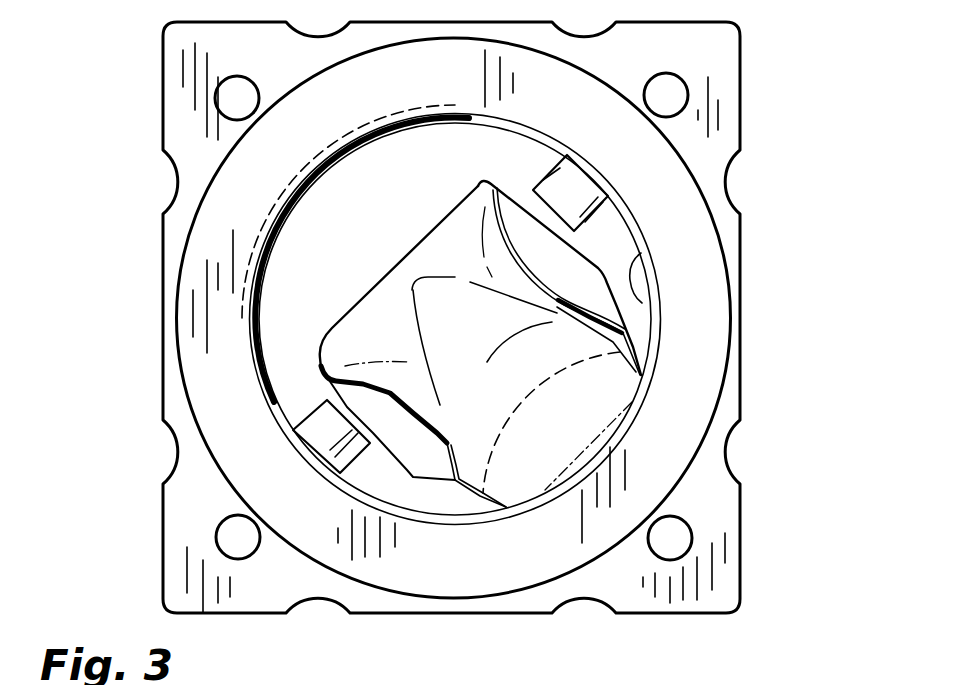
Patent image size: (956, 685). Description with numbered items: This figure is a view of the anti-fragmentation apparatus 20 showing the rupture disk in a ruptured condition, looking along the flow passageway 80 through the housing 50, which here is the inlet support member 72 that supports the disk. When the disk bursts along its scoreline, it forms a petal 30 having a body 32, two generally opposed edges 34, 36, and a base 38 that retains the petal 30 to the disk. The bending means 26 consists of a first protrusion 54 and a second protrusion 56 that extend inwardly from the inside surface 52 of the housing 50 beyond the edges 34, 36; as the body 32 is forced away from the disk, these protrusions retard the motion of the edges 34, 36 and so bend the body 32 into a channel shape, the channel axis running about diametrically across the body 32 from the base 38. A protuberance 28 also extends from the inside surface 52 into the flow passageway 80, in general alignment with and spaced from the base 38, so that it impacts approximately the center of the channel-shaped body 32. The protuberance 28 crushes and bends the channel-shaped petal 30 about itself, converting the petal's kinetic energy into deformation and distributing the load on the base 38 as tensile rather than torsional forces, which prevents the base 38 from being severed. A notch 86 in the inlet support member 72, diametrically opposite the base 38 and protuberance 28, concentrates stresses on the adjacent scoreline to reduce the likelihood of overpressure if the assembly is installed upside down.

The apparatus for preventing fragmentation of a rupture disk 20 is at (145, 302).
The bending means 26 is at (333, 302).
The protuberance 28 is at (597, 396).
The petal 30 is at (417, 287).
The petal body 32 is at (480, 344).
The petal edge 34 is at (407, 398).
The opposite petal edge 36 is at (514, 259).
The base of the petal 38 is at (606, 432).
The housing 50 is at (718, 80).
The inside surface of the housing 52 is at (636, 258).
The first protrusion 54 is at (293, 430).
The second protrusion 56 is at (549, 172).
The inlet support member 72 is at (451, 317).
The flow passageway 80 is at (323, 293).
The notch 86 is at (334, 145).